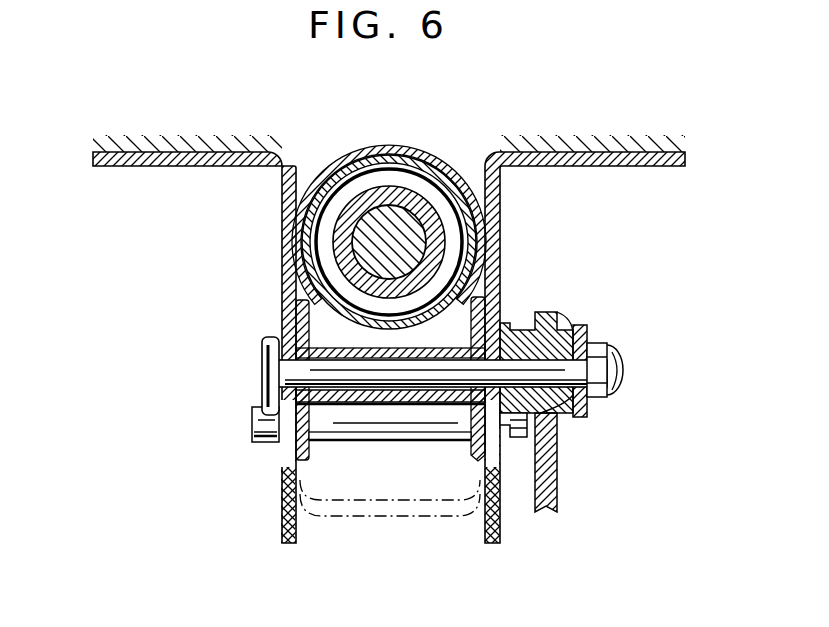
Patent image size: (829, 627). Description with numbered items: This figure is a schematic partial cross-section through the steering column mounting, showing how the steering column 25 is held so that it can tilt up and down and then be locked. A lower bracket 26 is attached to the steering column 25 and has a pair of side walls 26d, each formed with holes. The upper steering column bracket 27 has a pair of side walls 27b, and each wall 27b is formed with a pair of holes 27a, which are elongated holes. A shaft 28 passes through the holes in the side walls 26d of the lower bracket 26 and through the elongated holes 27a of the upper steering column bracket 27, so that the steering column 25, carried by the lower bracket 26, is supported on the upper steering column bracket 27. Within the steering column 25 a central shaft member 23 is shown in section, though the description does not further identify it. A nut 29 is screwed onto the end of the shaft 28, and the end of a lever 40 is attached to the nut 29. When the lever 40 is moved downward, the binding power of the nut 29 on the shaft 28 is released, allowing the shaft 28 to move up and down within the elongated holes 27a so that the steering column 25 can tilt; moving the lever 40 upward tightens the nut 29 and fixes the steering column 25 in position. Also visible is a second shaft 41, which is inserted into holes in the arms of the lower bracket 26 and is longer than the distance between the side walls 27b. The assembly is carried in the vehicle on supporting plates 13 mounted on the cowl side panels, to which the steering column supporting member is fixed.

The supporting plate 13 is at (357, 400).
The shaft 23 is at (366, 205).
The steering column 25 is at (396, 153).
The lower bracket 26 is at (285, 297).
The side wall 26d is at (308, 452).
The upper steering column bracket 27 is at (500, 240).
The hole 27a is at (252, 423).
The side wall 27b is at (281, 203).
The shaft 28 is at (262, 363).
The nut 29 is at (522, 330).
The lever 40 is at (557, 476).
The shaft 41 is at (252, 430).